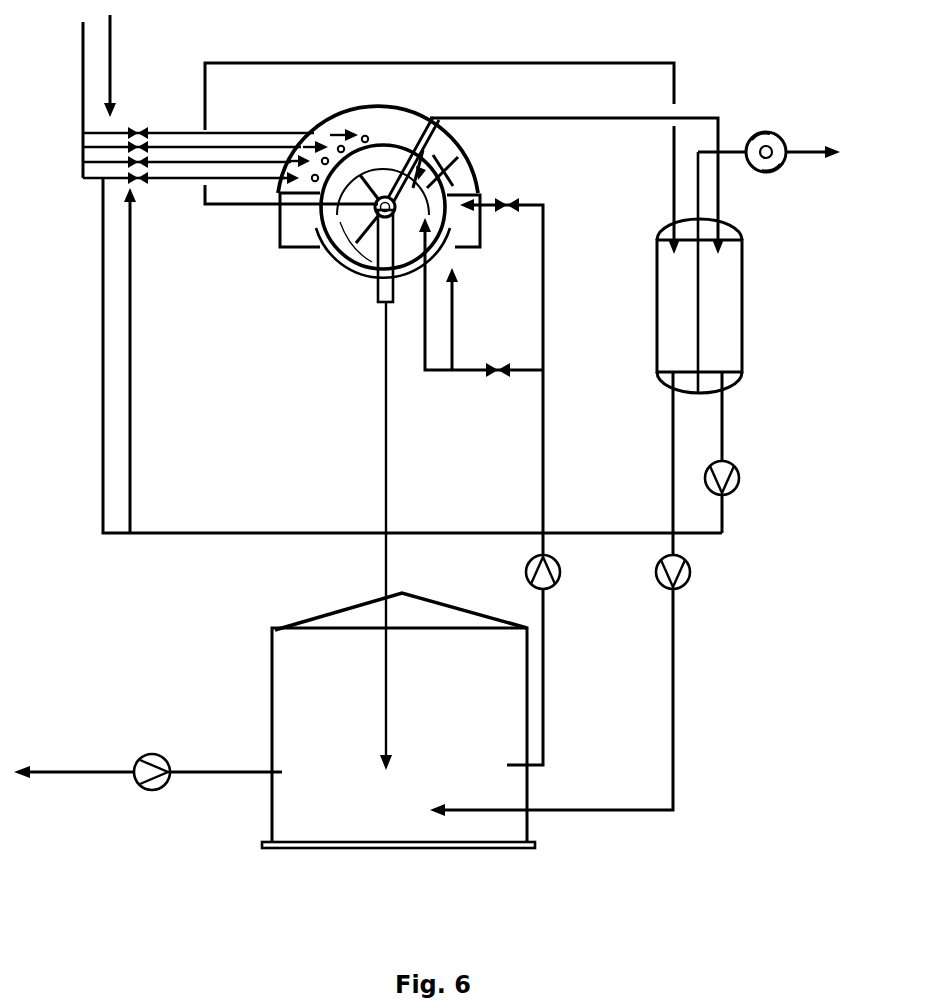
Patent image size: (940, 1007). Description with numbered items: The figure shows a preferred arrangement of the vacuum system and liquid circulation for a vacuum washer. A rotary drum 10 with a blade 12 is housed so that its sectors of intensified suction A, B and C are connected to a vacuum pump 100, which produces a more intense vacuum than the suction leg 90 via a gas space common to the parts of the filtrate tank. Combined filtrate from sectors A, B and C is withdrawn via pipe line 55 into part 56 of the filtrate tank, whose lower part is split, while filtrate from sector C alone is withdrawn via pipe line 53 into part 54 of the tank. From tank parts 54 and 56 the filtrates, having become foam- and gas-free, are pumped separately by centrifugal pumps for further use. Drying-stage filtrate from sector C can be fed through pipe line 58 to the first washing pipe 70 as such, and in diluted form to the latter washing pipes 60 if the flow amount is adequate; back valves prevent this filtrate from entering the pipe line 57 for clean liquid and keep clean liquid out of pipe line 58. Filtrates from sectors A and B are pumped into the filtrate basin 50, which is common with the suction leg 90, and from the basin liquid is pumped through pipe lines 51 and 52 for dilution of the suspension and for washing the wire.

The rotary drum 10 is at (345, 275).
The blade 12 is at (407, 142).
The filtrate basin 50 is at (325, 690).
The pipe line 51 is at (480, 373).
The pipe line 52 is at (570, 278).
The pipe line 53 is at (737, 118).
The part of the tank 54 is at (750, 281).
The pipe line 55 is at (302, 63).
The part of the filtrate tank 56 is at (708, 341).
The pipe line for clean liquid 57 is at (110, 58).
The pipe line 58 is at (128, 330).
The washing pipes 60 is at (392, 135).
The first washing pipe 70 is at (313, 200).
The suction leg 90 is at (386, 306).
The vacuum pump 100 is at (793, 130).
The sector of intensified suction A is at (365, 285).
The sector of intensified suction B is at (330, 255).
The sector of intensified suction C is at (440, 135).